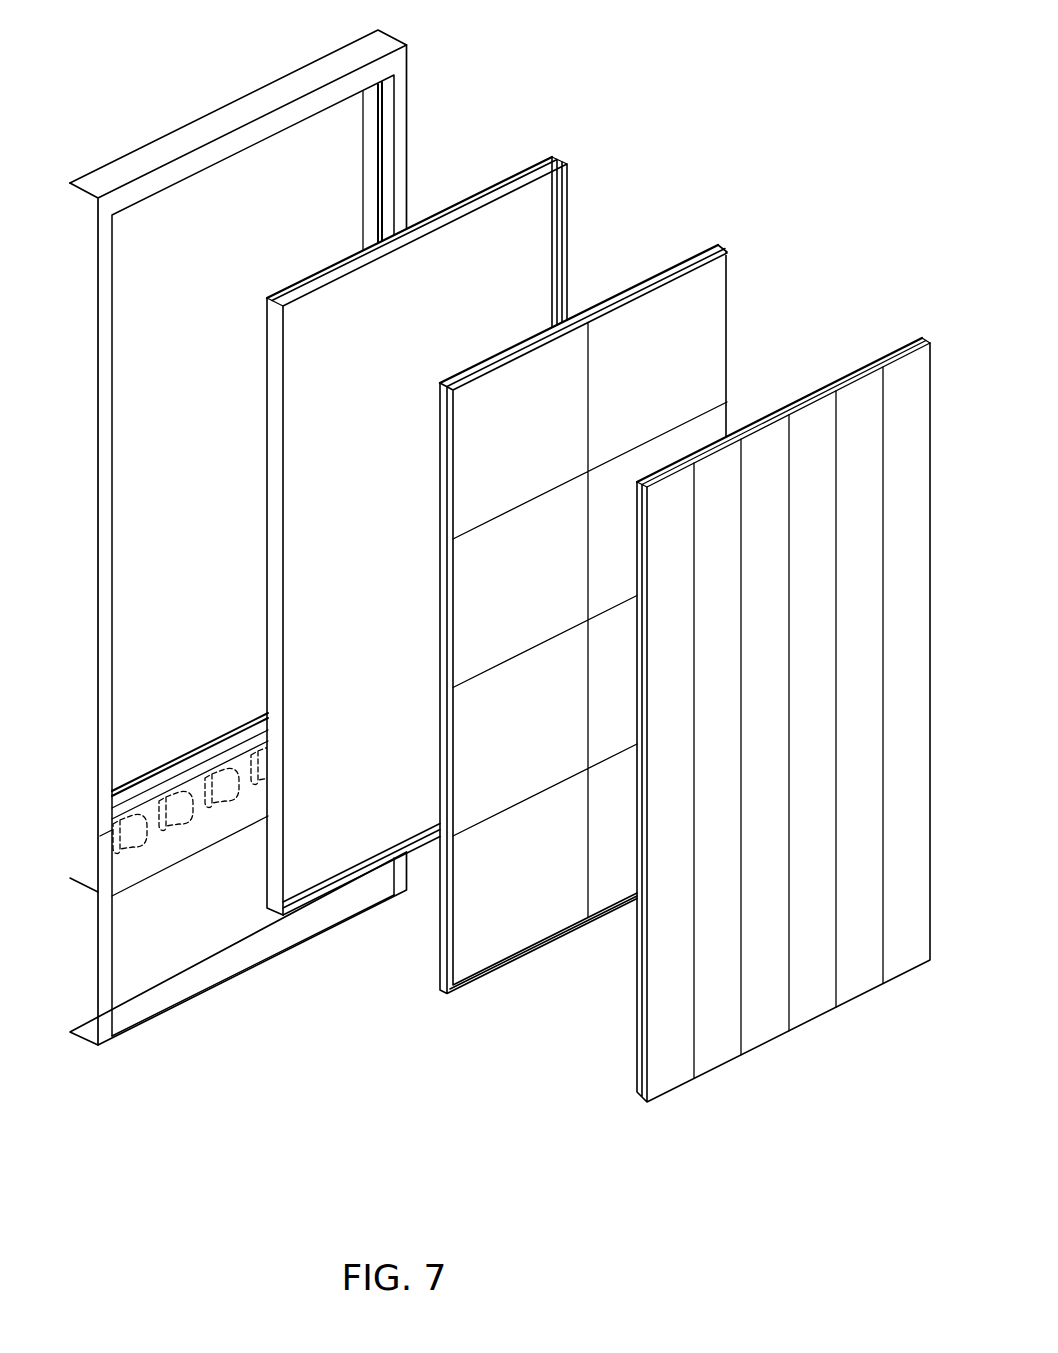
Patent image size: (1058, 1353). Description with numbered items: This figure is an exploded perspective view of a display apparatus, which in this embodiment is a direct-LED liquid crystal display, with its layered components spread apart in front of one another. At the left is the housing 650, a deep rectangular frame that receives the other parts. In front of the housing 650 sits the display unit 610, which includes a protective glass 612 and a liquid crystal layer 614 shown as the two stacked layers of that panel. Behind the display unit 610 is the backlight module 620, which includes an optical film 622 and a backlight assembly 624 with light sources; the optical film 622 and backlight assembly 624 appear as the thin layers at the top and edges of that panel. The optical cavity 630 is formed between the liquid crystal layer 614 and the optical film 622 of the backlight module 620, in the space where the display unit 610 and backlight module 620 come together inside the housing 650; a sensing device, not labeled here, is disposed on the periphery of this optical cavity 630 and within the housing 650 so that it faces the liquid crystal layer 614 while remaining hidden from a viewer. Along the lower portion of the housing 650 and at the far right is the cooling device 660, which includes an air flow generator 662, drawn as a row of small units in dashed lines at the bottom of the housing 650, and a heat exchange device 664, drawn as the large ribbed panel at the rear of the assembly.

The display unit 610 is at (413, 512).
The protective glass 612 is at (266, 468).
The liquid crystal layer 614 is at (282, 541).
The backlight module 620 is at (643, 581).
The optical film 622 is at (680, 262).
The backlight assembly 624 is at (693, 266).
The optical cavity 630 is at (383, 937).
The housing 650 is at (304, 531).
The cooling device 660 is at (521, 758).
The air flow generator 662 is at (140, 847).
The heat exchange device 664 is at (618, 1047).